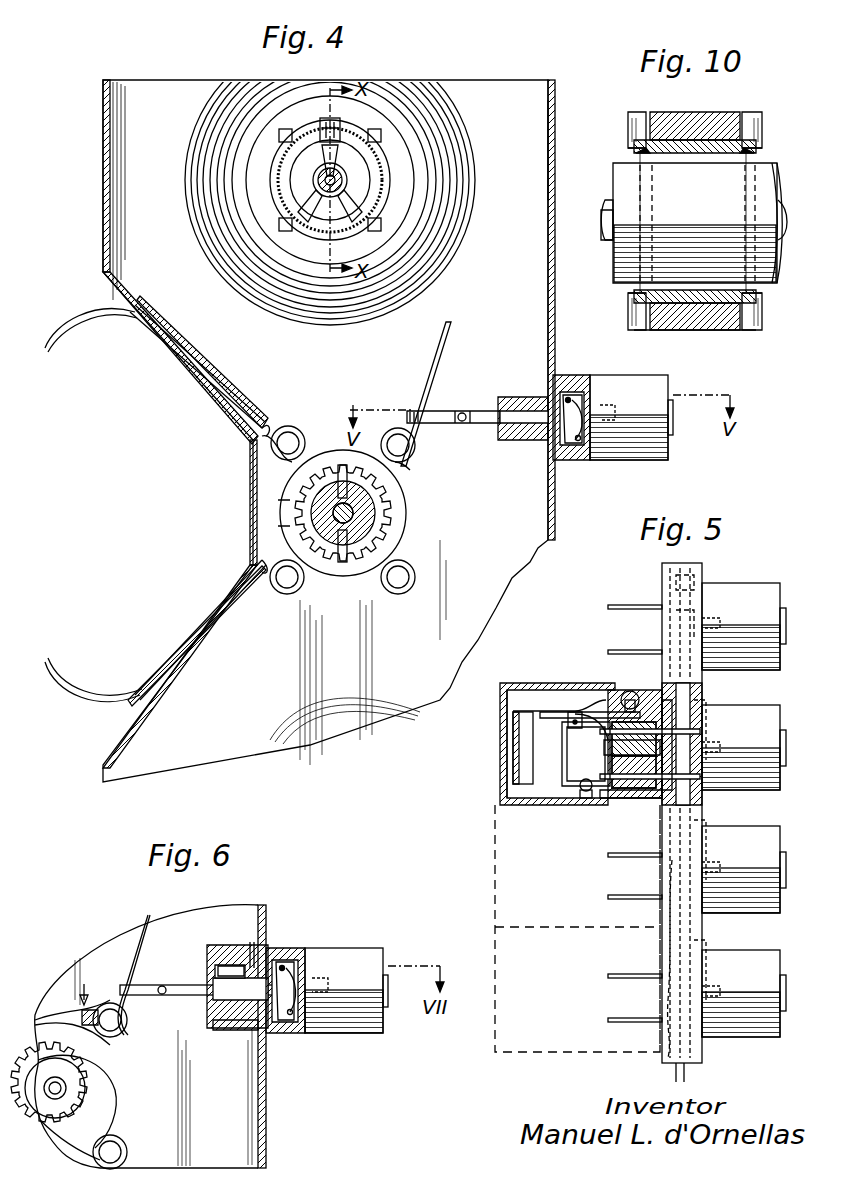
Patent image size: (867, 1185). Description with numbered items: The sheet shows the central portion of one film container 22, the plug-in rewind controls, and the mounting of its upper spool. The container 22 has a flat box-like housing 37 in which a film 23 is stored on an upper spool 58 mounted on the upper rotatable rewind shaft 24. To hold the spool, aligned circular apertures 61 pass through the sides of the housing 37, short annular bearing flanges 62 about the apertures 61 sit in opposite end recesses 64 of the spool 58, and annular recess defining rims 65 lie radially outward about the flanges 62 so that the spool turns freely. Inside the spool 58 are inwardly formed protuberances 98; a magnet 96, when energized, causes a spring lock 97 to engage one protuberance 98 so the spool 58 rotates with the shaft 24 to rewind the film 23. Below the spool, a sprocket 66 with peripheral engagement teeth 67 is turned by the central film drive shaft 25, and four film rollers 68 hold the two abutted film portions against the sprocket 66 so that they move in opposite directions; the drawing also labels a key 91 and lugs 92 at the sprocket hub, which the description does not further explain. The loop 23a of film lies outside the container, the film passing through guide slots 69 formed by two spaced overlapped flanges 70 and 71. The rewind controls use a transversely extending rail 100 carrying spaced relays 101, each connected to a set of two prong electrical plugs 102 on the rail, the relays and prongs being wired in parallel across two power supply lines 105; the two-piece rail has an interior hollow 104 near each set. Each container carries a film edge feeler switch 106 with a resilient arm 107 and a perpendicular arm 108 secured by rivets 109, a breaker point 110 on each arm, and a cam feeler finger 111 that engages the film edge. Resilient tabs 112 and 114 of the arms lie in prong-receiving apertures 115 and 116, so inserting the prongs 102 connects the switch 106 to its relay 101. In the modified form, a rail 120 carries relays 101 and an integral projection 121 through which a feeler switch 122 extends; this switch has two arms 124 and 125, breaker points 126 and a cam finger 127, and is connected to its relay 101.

In FIG. 4, the film container 22 is at (100, 158).
In FIG. 6, the film container 22 is at (276, 1118).
In FIG. 4, the film 23 is at (368, 318).
In FIG. 10, the film 23 is at (722, 330).
In FIG. 5, the film 23 is at (530, 768).
In FIG. 4, the film loop 23a is at (50, 352).
In FIG. 4, the upper rotatable rewind shaft 24 is at (375, 168).
In FIG. 10, the upper rotatable rewind shaft 24 is at (622, 185).
In FIG. 4, the central rotatable film drive shaft 25 is at (366, 510).
In FIG. 4, the housing 37 is at (553, 148).
In FIG. 10, the housing 37 is at (764, 324).
In FIG. 4, the upper spool 58 is at (390, 142).
In FIG. 10, the upper spool 58 is at (722, 136).
In FIG. 10, the circular apertures 61 is at (632, 156).
In FIG. 10, the annular bearing flanges 62 is at (641, 160).
In FIG. 10, the end recesses 64 is at (646, 152).
In FIG. 10, the recess defining rims 65 is at (630, 122).
In FIG. 4, the sprocket 66 is at (397, 524).
In FIG. 6, the sprocket 66 is at (63, 1101).
In FIG. 4, the engagement teeth 67 is at (408, 538).
In FIG. 4, the film rollers 68 is at (290, 425).
In FIG. 4, the guide slots 69 is at (190, 380).
In FIG. 4, the flange 70 is at (222, 385).
In FIG. 4, the flange 71 is at (172, 360).
In FIG. 4, the key 91 is at (338, 490).
In FIG. 4, the lugs 92 is at (298, 519).
In FIG. 4, the magnet 96 is at (355, 195).
In FIG. 4, the spring lock 97 is at (300, 130).
In FIG. 4, the protuberances 98 is at (358, 122).
In FIG. 4, the rail 100 is at (562, 378).
In FIG. 5, the rail 100 is at (670, 565).
In FIG. 4, the relays 101 is at (650, 386).
In FIG. 5, the relays 101 is at (764, 668).
In FIG. 4, the two prong electrical plugs 102 is at (514, 410).
In FIG. 5, the two prong electrical plugs 102 is at (640, 606).
In FIG. 4, the interior hollow 104 is at (585, 388).
In FIG. 5, the power supply lines 105 is at (674, 1075).
In FIG. 4, the film edge feeler switch 106 is at (468, 404).
In FIG. 5, the film edge feeler switch 106 is at (556, 778).
In FIG. 4, the resilient arm 107 is at (413, 406).
In FIG. 5, the resilient arm 107 is at (582, 694).
In FIG. 4, the perpendicularly extending arm 108 is at (456, 432).
In FIG. 5, the perpendicularly extending arm 108 is at (562, 745).
In FIG. 5, the rivets 109 is at (632, 690).
In FIG. 5, the breaker point 110 is at (568, 716).
In FIG. 5, the cam feeler finger 111 is at (514, 713).
In FIG. 5, the resilient tab 112 is at (612, 692).
In FIG. 5, the resilient tab 114 is at (628, 798).
In FIG. 5, the prong-receiving aperture 115 is at (660, 726).
In FIG. 5, the prong-receiving aperture 116 is at (660, 800).
In FIG. 6, the rail 120 is at (294, 1033).
In FIG. 6, the integral projection 121 is at (210, 1006).
In FIG. 6, the feeler switch 122 is at (164, 976).
In FIG. 6, the arm 124 is at (238, 1030).
In FIG. 6, the arm 125 is at (232, 962).
In FIG. 6, the breaker points 126 is at (252, 940).
In FIG. 6, the cam finger 127 is at (124, 985).